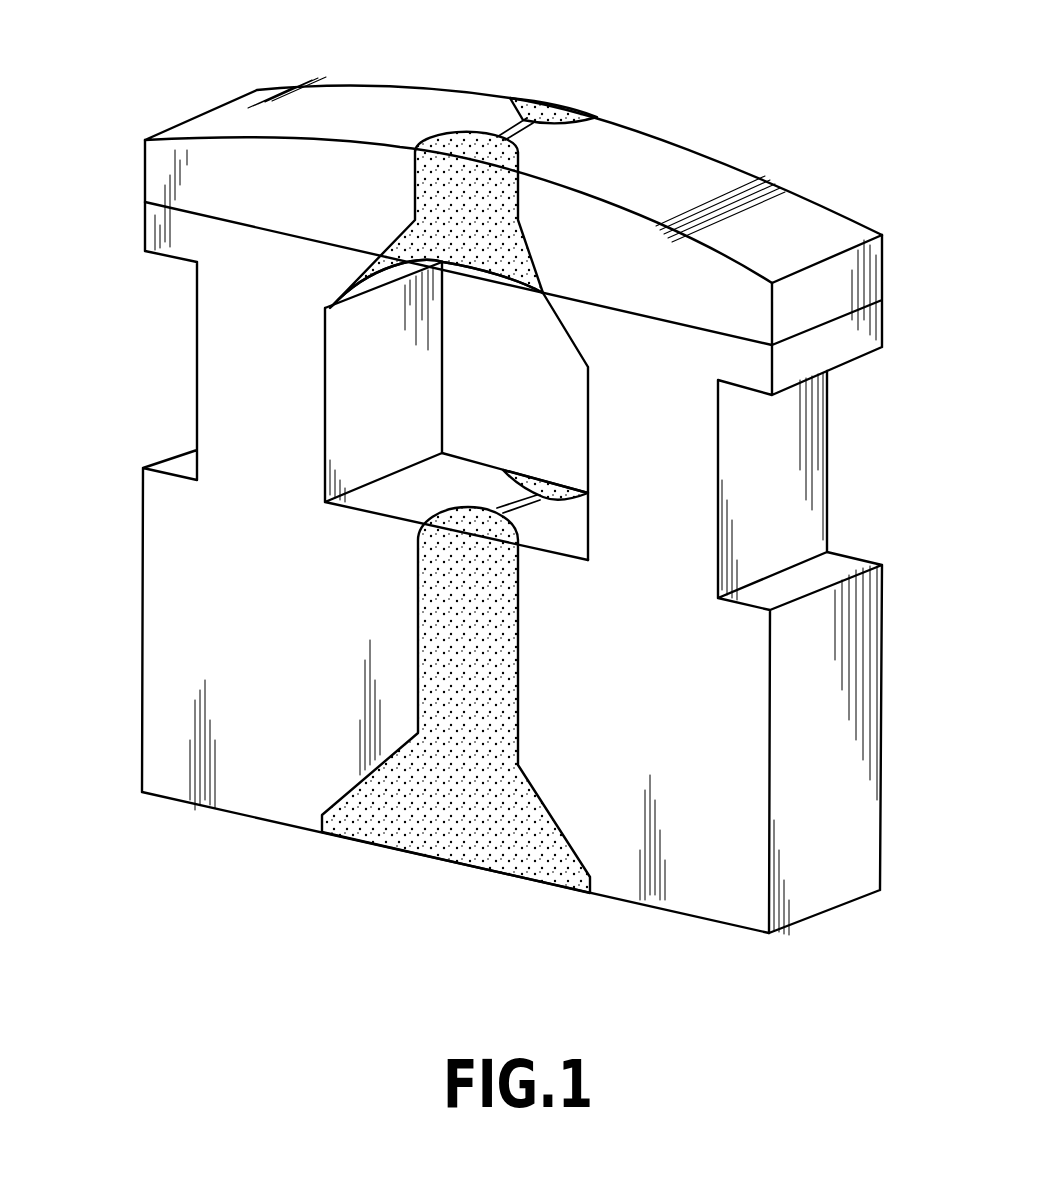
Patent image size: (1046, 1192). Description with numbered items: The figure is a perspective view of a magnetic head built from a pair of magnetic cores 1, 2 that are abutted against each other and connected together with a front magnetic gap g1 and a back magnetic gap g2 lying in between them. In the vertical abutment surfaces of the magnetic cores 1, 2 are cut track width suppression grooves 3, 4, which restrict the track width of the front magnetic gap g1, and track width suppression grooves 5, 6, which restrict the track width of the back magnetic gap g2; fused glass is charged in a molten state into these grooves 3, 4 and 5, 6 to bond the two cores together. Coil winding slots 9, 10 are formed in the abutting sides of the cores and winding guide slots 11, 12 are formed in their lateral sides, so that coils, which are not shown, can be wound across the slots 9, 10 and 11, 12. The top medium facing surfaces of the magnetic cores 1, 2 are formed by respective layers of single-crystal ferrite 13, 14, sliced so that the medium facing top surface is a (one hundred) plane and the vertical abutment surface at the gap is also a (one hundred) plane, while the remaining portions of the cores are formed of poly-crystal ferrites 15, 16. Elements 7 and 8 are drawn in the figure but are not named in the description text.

The magnetic core 1 is at (892, 692).
The magnetic core 2 is at (125, 594).
The track width suppression groove 3 is at (585, 110).
The track width suppression groove 4 is at (523, 97).
The track width suppression groove 5 is at (527, 537).
The track width suppression groove 6 is at (510, 480).
The arcuate edge of pole tip 7 is at (483, 262).
The lower pole piece base 8 is at (453, 850).
The coil winding slot 9 is at (588, 420).
The coil winding slot 10 is at (353, 373).
The winding guide slot 11 is at (815, 463).
The winding guide slot 12 is at (197, 298).
The single-crystal ferrite layer 13 is at (800, 194).
The single-crystal ferrite layer 14 is at (330, 97).
The poly-crystal ferrite 15 is at (852, 817).
The poly-crystal ferrite 16 is at (162, 717).
The magnetic gap (front gap) g1 is at (522, 136).
The magnetic gap (back gap) g2 is at (508, 502).